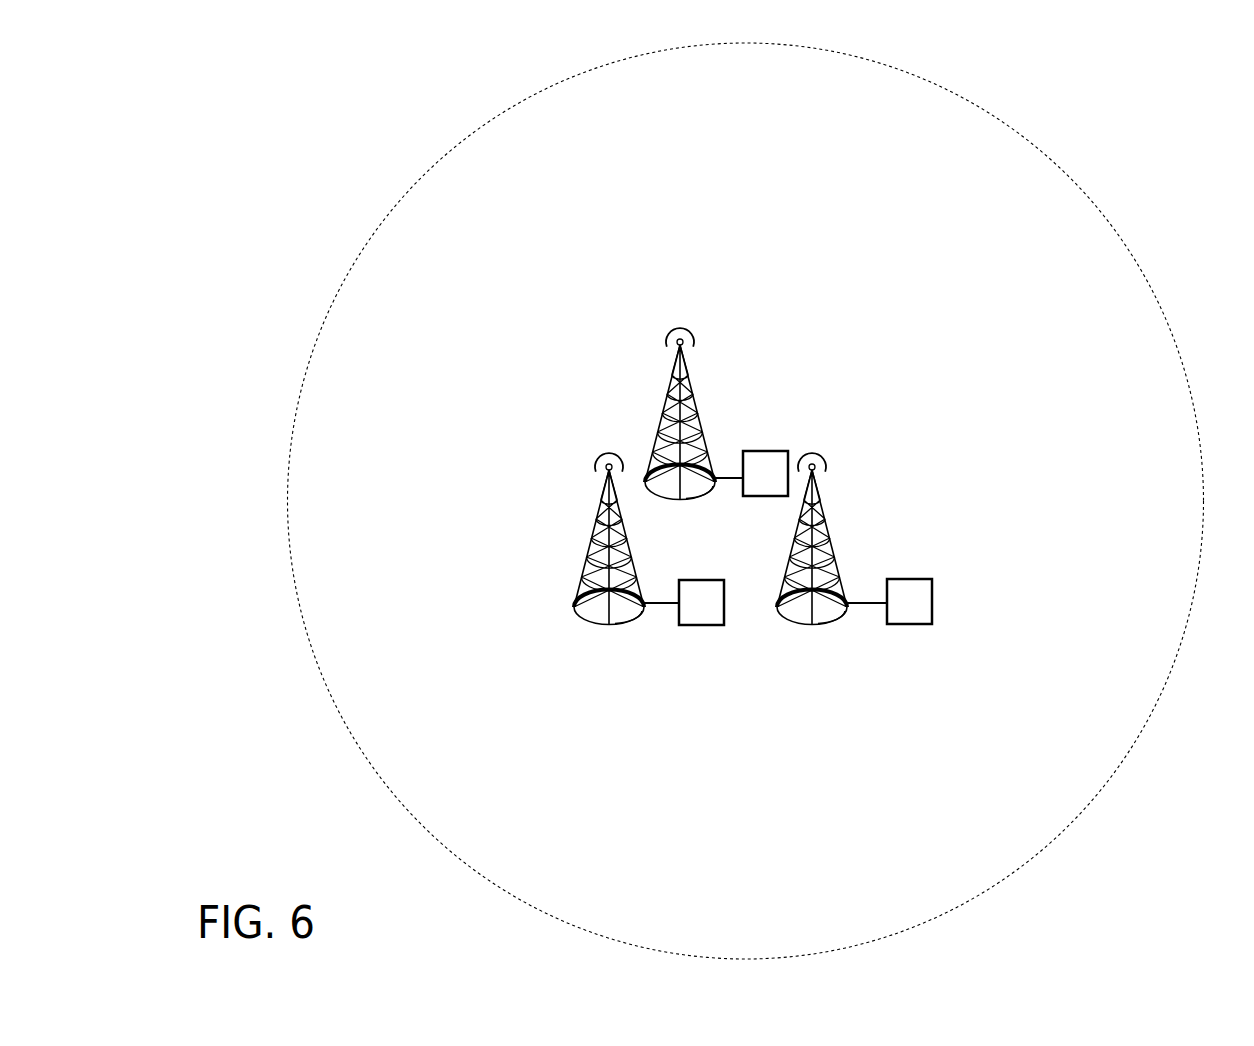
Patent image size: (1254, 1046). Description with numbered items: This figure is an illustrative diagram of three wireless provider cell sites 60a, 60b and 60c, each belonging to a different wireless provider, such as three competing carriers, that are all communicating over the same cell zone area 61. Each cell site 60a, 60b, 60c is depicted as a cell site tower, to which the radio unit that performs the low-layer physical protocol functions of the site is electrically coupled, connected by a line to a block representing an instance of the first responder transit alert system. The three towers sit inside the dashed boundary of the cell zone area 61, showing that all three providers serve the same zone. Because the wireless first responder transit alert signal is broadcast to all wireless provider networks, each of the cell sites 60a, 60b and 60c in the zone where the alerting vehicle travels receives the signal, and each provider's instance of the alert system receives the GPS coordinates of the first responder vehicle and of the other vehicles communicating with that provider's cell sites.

The wireless provider cell site 60a is at (571, 445).
The wireless provider cell site 60b is at (652, 332).
The wireless provider cell site 60c is at (838, 447).
The cell zone area 61 is at (1148, 284).